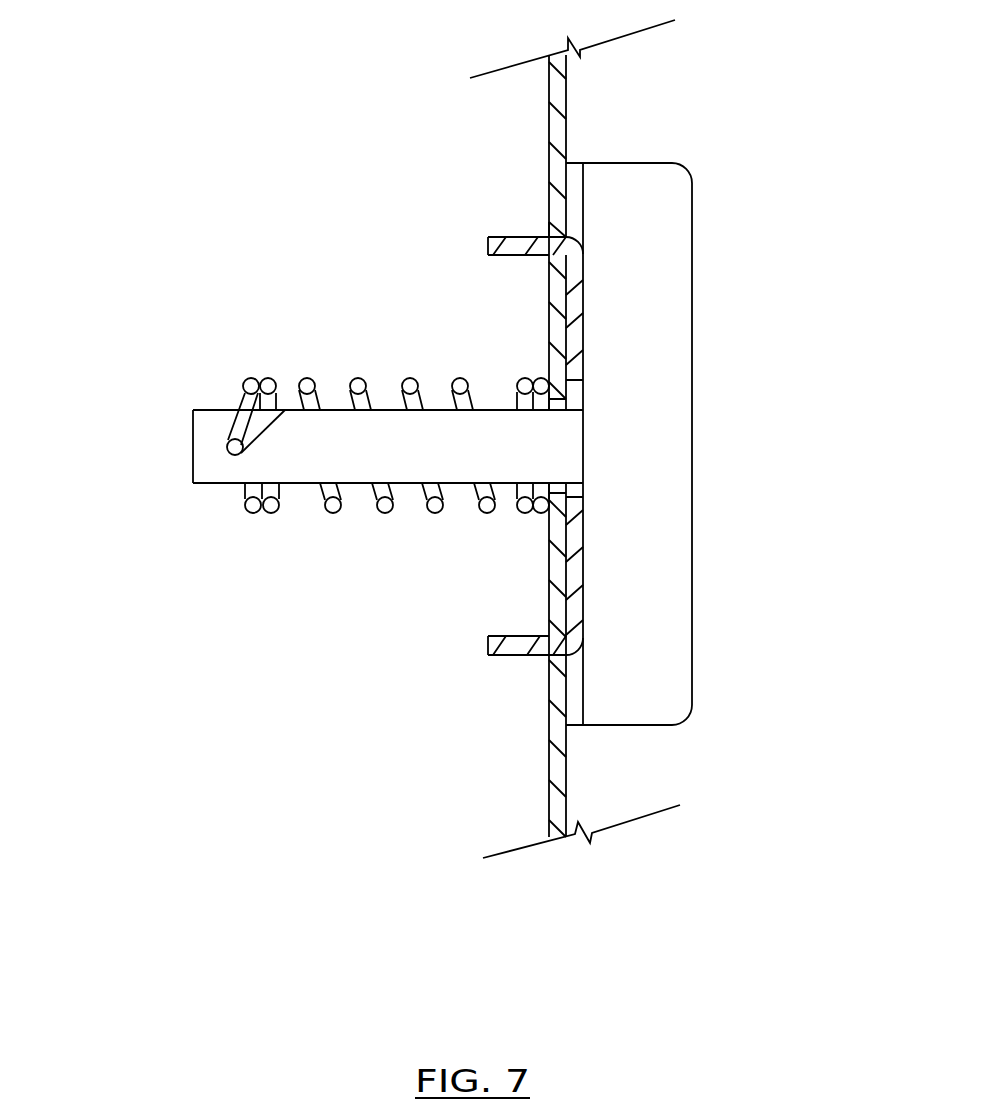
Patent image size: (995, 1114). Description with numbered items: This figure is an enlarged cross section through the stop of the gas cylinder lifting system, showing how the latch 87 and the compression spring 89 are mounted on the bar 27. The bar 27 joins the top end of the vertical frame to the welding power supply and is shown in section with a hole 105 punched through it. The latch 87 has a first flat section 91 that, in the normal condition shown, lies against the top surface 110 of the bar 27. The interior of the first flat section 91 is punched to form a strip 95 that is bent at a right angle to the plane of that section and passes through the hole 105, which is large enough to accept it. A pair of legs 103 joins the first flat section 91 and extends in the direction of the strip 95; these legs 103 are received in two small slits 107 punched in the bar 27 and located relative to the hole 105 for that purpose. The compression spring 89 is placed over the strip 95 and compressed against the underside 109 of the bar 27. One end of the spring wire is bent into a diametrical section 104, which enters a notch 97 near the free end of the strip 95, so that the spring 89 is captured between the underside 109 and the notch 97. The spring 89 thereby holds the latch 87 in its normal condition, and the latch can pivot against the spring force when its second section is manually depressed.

The bar 27 is at (550, 148).
The top surface of the bar 110 is at (567, 128).
The underside of the bar 109 is at (552, 760).
The slits 107 is at (547, 233).
The legs 103 is at (490, 243).
The latch 87 is at (585, 292).
The first flat section 91 is at (578, 547).
The strip 95 is at (210, 433).
The hole 105 is at (562, 482).
The diametrical section 104 is at (229, 452).
The notch 97 is at (229, 440).
The compression spring 89 is at (333, 507).